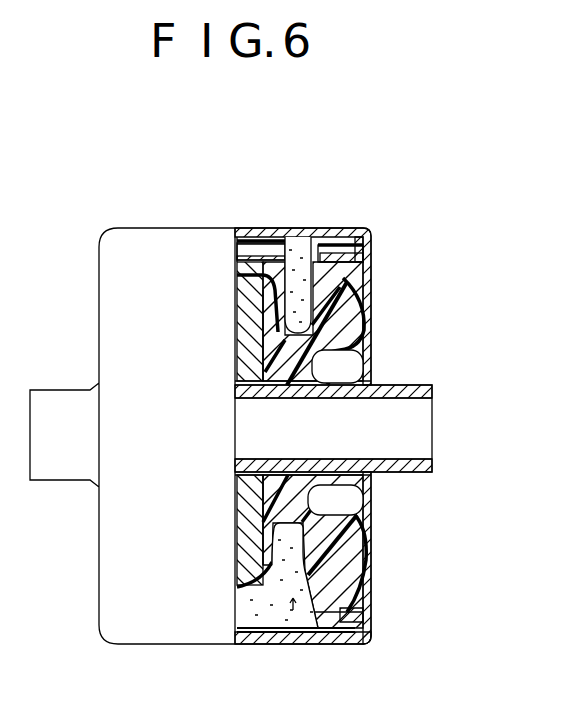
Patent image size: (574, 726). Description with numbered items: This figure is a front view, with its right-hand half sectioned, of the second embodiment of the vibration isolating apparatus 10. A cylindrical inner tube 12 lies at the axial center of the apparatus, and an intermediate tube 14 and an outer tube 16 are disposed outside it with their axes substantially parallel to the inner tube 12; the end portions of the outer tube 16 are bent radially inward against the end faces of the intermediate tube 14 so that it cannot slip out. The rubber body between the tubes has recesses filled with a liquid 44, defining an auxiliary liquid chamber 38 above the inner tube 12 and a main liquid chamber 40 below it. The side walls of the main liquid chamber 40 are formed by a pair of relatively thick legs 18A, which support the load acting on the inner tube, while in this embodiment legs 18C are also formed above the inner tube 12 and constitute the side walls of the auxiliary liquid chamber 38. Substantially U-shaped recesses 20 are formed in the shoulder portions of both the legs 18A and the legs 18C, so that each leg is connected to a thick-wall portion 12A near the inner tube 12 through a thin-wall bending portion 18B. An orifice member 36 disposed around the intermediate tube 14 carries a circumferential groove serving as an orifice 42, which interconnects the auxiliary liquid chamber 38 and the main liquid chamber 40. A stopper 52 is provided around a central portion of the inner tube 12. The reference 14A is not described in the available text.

The vibration isolating apparatus 10 is at (368, 174).
The inner tube 12 is at (432, 387).
The thick-wall portion 12A is at (305, 457).
The intermediate tube 14 is at (372, 256).
The cover flange 14A is at (372, 243).
The outer tube 16 is at (276, 241).
The legs 18A is at (352, 572).
The thin-wall bending portions 18B is at (340, 354).
The legs 18C is at (335, 312).
The recesses 20 is at (358, 373).
The orifice member 36 is at (284, 237).
The auxiliary liquid chamber 38 is at (315, 237).
The main liquid chamber 40 is at (311, 629).
The orifice 42 is at (245, 242).
The liquid 44 is at (372, 290).
The stopper 52 is at (243, 320).